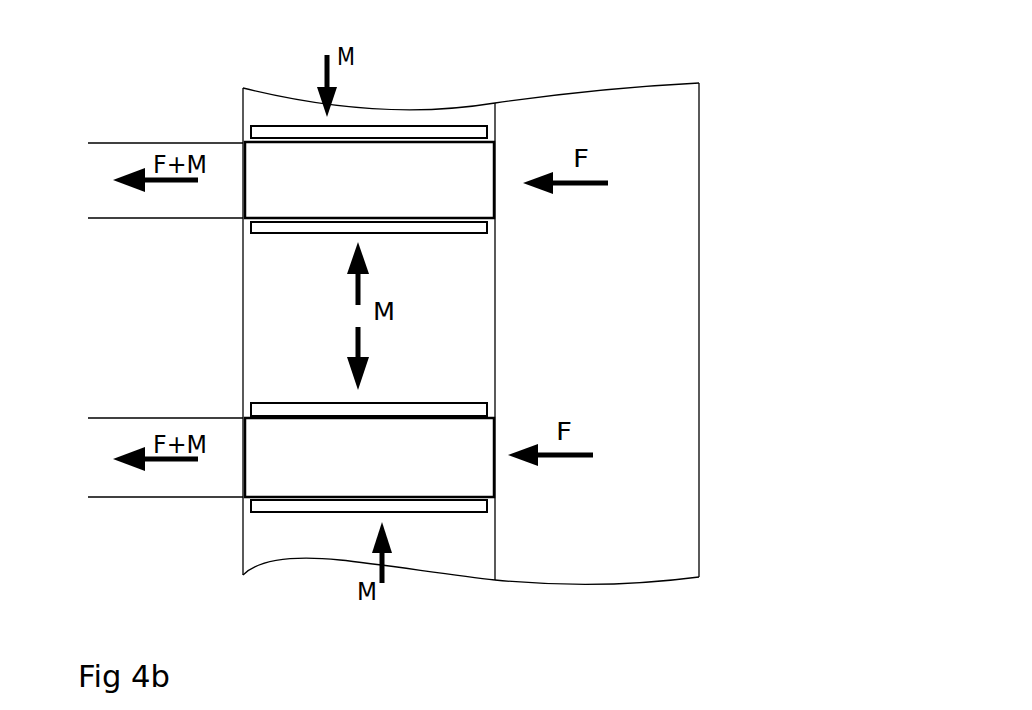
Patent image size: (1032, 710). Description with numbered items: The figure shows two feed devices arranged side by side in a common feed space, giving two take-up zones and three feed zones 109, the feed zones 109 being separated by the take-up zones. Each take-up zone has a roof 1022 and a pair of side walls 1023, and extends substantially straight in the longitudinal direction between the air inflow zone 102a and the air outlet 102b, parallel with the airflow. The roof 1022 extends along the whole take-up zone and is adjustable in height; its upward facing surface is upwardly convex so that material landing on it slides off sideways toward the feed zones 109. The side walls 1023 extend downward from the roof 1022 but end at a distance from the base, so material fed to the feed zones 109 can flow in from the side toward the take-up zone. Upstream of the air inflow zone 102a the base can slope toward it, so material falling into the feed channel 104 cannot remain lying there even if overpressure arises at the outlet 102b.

The air inflow zone 102a is at (495, 183).
The air outlet 102b is at (242, 180).
The feed channel 104 is at (644, 248).
The feed zone 109 is at (410, 122).
The roof 1022 is at (395, 192).
The side wall 1023 is at (310, 228).